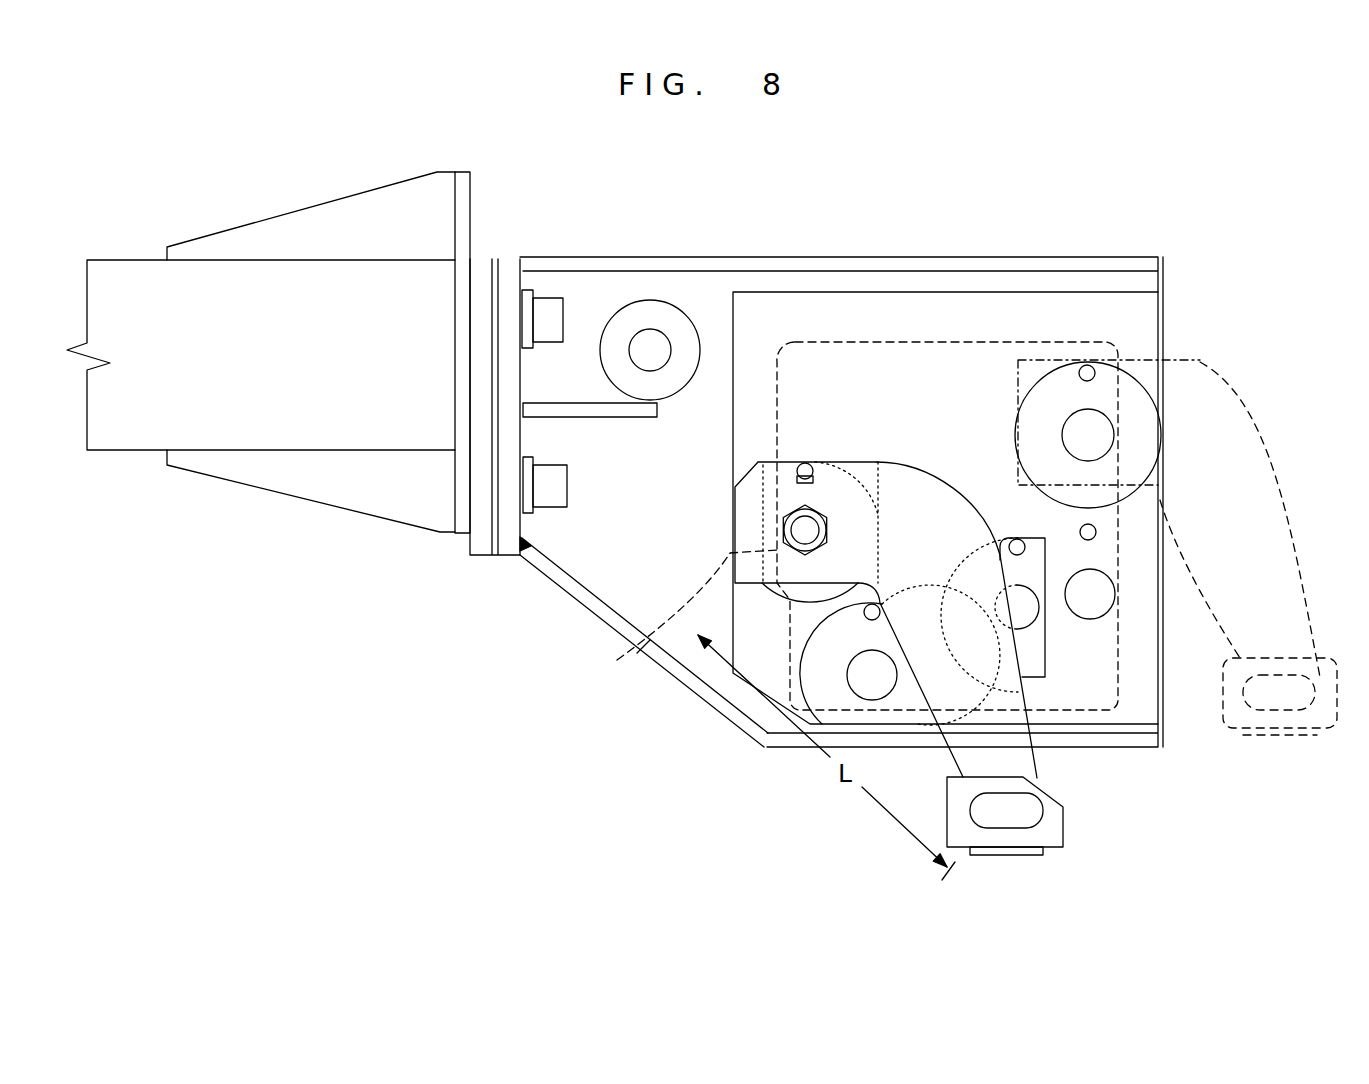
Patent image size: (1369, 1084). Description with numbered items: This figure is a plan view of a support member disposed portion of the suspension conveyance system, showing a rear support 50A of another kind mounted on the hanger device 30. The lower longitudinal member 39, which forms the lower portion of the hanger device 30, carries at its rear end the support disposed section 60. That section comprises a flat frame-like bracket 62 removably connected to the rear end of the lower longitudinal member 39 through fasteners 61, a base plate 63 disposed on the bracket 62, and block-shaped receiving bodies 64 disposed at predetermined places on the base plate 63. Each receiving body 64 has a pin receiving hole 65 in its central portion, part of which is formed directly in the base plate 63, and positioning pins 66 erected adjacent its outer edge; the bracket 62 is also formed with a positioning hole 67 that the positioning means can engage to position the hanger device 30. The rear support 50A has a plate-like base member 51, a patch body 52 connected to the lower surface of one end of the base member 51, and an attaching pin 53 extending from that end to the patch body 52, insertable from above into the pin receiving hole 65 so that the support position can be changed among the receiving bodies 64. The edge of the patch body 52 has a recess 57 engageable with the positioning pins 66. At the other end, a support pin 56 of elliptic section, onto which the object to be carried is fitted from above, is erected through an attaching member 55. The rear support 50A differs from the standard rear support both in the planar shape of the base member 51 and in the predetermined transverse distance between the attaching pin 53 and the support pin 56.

The hanger device 30 is at (198, 222).
The lower longitudinal member 39 is at (143, 440).
The rear support 50A is at (860, 448).
The base member 51 is at (900, 462).
The patch body 52 is at (856, 526).
The attaching pin 53 is at (790, 528).
The attaching member 55 is at (1060, 833).
The support pin 56 is at (1010, 822).
The recess 57 is at (812, 482).
The support disposed section 60 is at (794, 243).
The fastener 61 is at (545, 296).
The bracket 62 is at (570, 560).
The base plate 63 is at (743, 303).
The receiving body 64 is at (1133, 393).
The pin receiving hole 65 is at (1102, 578).
The positioning pin 66 is at (1090, 368).
The positioning hole 67 is at (650, 343).